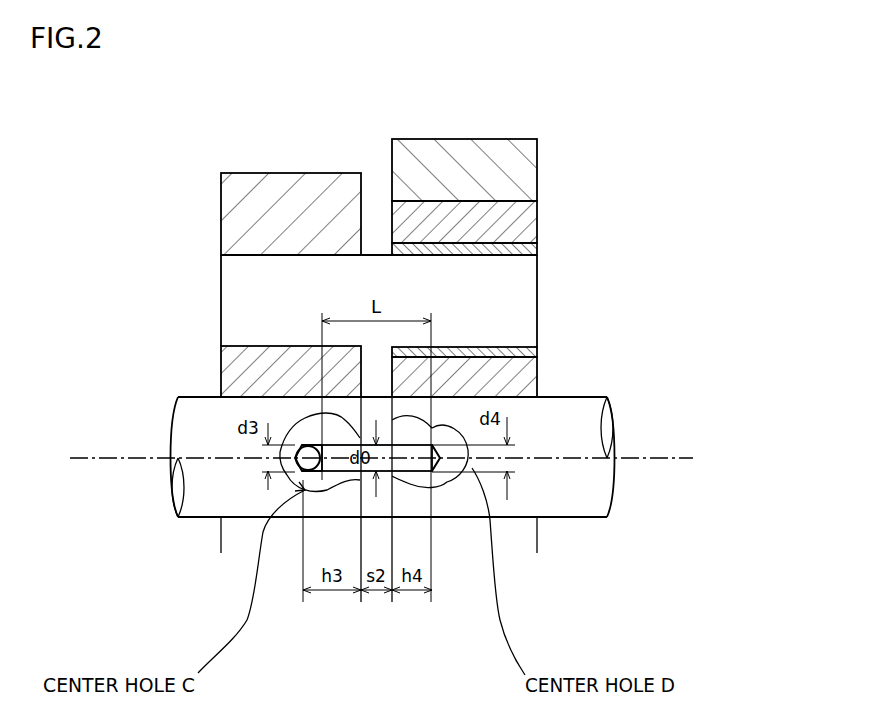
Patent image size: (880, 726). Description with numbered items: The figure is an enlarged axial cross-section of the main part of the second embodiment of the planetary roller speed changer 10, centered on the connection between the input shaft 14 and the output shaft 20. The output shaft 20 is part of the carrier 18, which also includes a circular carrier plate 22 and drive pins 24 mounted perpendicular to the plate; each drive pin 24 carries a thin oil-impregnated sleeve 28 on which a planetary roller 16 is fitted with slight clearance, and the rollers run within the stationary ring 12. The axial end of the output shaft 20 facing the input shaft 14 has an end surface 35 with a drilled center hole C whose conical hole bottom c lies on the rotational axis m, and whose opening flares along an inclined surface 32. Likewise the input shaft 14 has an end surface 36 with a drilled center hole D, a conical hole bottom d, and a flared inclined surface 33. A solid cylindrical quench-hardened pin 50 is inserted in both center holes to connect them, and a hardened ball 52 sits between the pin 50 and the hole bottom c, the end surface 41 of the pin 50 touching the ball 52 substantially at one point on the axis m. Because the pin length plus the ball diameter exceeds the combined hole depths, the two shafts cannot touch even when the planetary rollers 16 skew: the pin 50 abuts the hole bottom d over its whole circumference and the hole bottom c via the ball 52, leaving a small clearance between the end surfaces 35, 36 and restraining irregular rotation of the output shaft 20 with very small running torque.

The planetary roller speed changer 10 is at (612, 131).
The stationary ring 12 is at (495, 139).
The input shaft 14 is at (580, 517).
The planetary rollers 16 is at (520, 213).
The carrier 18 is at (190, 172).
The output shaft 20 is at (180, 518).
The carrier plate 22 is at (277, 172).
The drive pins 24 is at (247, 280).
The sleeve 28 is at (530, 352).
The inclined surface 32 is at (316, 492).
The inclined surface 33 is at (423, 485).
The end surface 35 is at (338, 415).
The end surface 36 is at (448, 440).
The end surface of the pin 41 is at (497, 352).
The pin 50 is at (292, 443).
The ball 52 is at (275, 468).
The rotational axis m is at (647, 458).
The hole bottom c is at (222, 520).
The hole bottom d is at (447, 490).